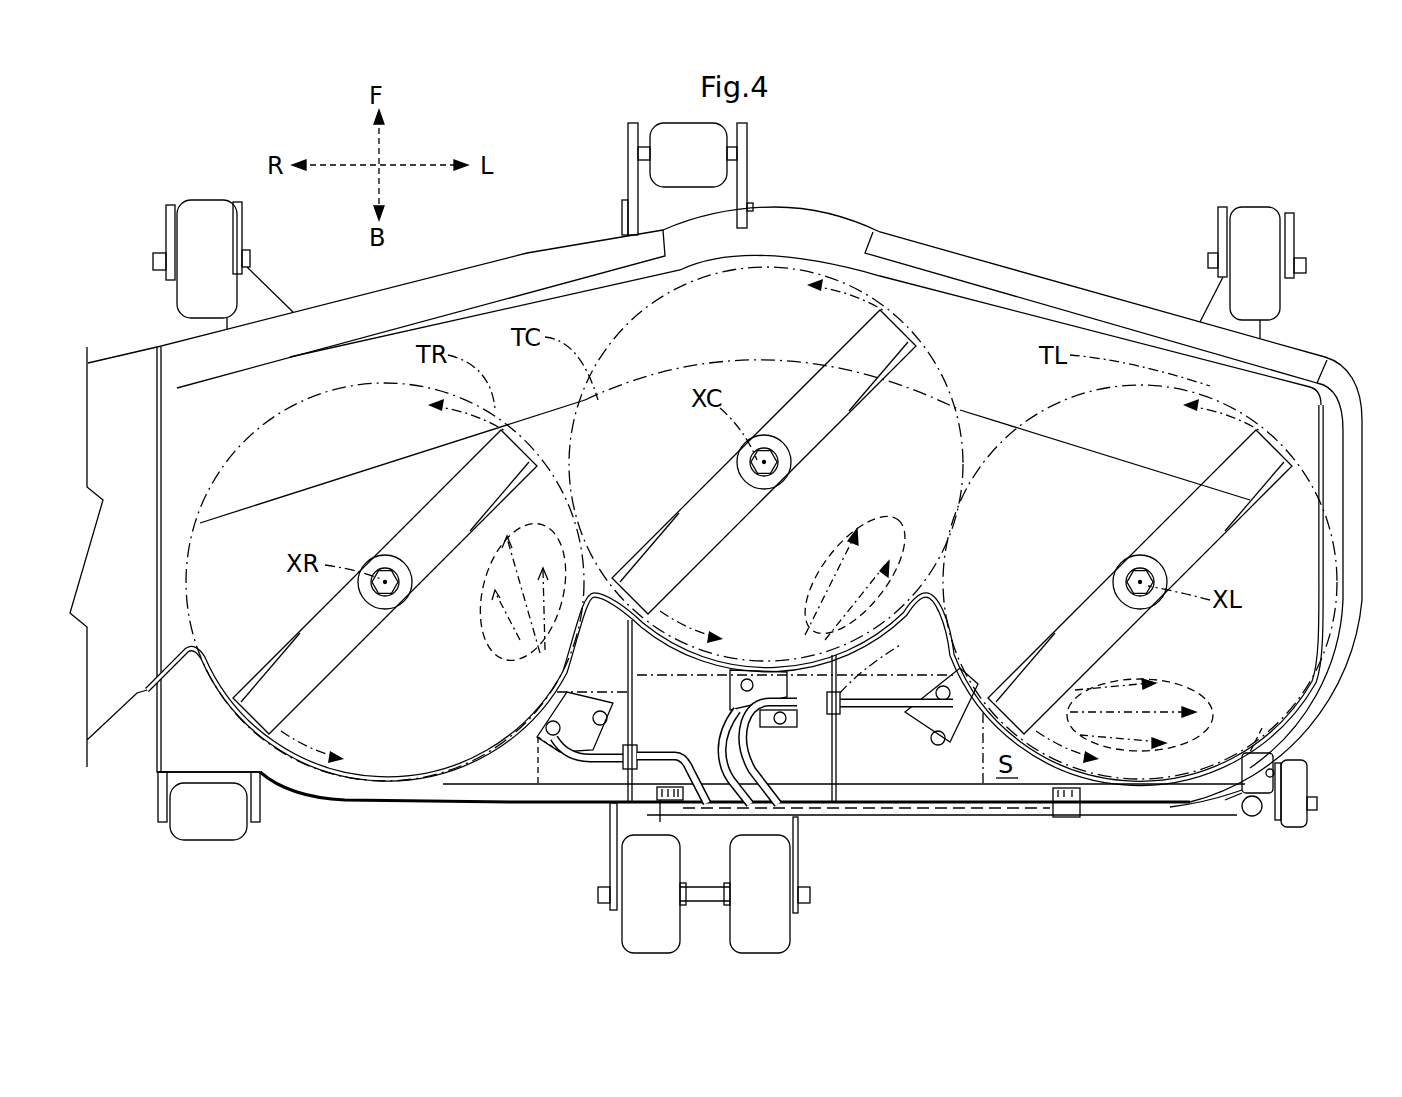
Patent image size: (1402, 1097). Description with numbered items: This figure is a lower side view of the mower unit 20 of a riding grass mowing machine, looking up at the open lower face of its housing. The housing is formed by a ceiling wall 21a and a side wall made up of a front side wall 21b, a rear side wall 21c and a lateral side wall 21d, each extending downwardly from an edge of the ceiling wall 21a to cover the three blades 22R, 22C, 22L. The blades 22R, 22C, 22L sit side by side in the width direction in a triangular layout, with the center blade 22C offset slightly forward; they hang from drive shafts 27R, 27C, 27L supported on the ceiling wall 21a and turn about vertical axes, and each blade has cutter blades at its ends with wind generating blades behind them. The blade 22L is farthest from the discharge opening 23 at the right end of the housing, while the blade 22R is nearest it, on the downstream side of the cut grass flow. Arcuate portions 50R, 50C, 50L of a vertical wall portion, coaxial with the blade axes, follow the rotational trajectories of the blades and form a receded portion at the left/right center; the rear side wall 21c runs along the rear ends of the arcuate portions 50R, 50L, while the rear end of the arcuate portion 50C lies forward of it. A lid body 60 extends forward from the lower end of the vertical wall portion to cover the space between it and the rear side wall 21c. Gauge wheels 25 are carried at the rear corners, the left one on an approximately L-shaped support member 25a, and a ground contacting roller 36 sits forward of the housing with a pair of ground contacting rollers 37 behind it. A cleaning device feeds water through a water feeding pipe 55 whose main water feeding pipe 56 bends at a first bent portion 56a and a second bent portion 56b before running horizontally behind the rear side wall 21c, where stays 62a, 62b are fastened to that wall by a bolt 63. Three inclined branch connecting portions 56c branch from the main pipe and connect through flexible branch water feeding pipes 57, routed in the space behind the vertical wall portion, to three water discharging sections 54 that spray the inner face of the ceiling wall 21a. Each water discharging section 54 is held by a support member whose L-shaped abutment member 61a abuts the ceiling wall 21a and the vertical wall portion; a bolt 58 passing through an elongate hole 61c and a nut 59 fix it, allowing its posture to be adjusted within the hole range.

The mower unit 20 is at (1195, 143).
The ceiling wall 21a is at (970, 333).
The front side wall 21b is at (823, 213).
The rear side wall 21c is at (445, 800).
The lateral side wall 21d is at (1364, 484).
The blade 22R is at (428, 515).
The blade 22C is at (703, 498).
The blade 22L is at (1153, 523).
The discharge opening 23 is at (168, 463).
The gauge wheel 25 is at (200, 200).
The support member 25a is at (1250, 816).
The drive shaft 27R is at (385, 597).
The drive shaft 27C is at (778, 465).
The drive shaft 27L is at (1140, 596).
The ground contacting roller 36 is at (682, 135).
The ground contacting rollers 37 is at (635, 930).
The arcuate portion 50R is at (445, 770).
The arcuate portion 50C is at (887, 610).
The arcuate portion 50L is at (1290, 702).
The water discharging section 54 is at (545, 705).
The water feeding pipe 55 is at (930, 830).
The main water feeding pipe 56 is at (893, 808).
The first bent portion 56a is at (1248, 753).
The second bent portion 56b is at (1195, 808).
The branch connecting portion 56c is at (745, 805).
The branch water feeding pipe 57 is at (735, 690).
The bolt 58 is at (540, 738).
The nut 59 is at (549, 744).
The lid body 60 is at (840, 693).
The abutment member 61a is at (600, 670).
The elongate hole 61c is at (543, 743).
The stay 62a is at (660, 805).
The stay 62b is at (1068, 817).
The bolt 63 is at (683, 800).